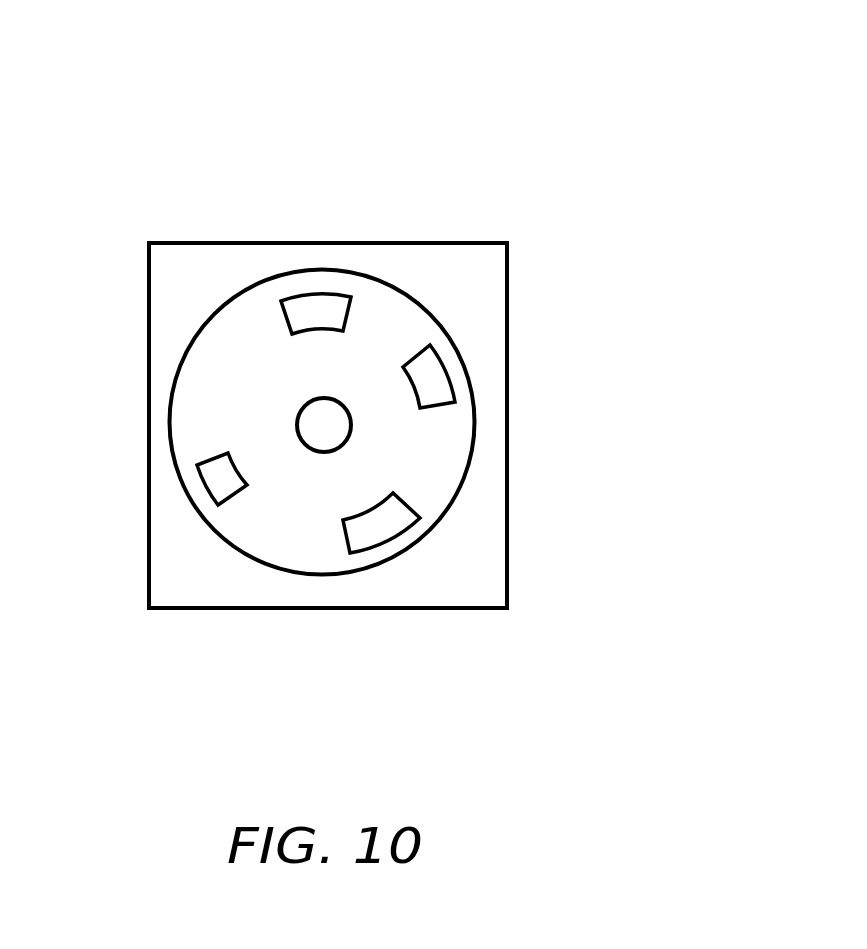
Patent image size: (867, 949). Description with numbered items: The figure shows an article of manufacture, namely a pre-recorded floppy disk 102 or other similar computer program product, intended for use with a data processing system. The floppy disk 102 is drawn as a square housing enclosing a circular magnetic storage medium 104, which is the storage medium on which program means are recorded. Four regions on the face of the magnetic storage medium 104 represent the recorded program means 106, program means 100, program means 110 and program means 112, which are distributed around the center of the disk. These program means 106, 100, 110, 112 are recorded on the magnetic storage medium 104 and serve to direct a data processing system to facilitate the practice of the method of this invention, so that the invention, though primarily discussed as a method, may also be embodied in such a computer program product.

The program means 100 is at (367, 533).
The pre-recorded floppy disk 102 is at (369, 151).
The magnetic storage medium 104 is at (420, 443).
The program means 106 is at (217, 478).
The program means 110 is at (428, 380).
The program means 112 is at (337, 307).